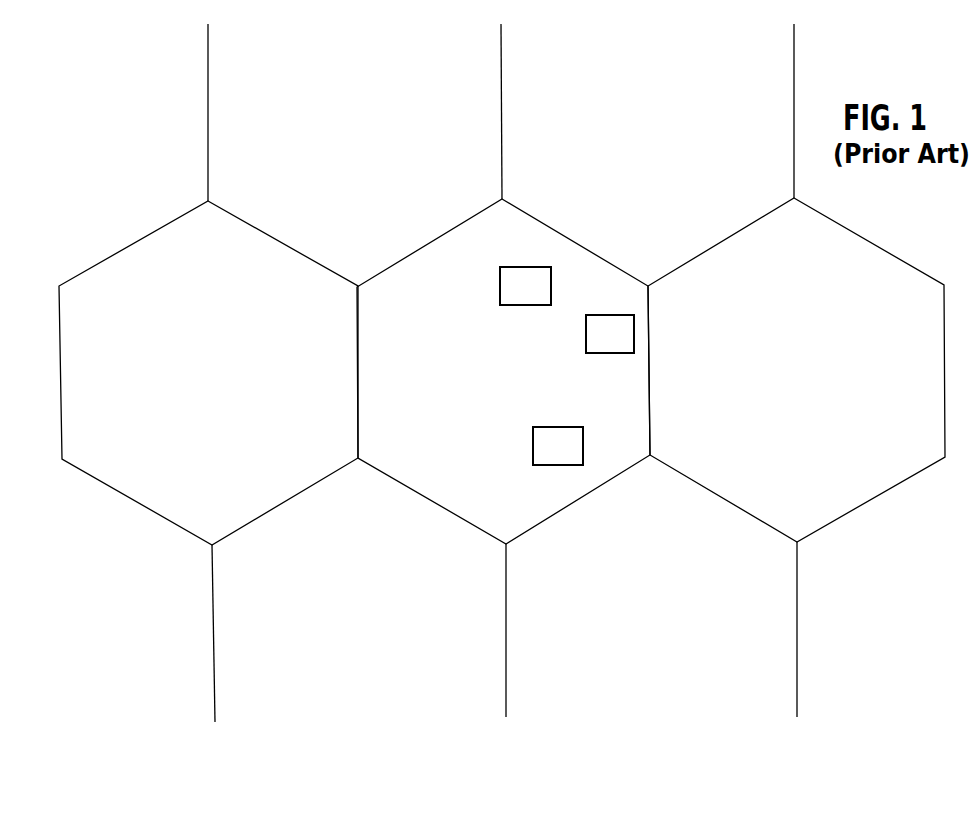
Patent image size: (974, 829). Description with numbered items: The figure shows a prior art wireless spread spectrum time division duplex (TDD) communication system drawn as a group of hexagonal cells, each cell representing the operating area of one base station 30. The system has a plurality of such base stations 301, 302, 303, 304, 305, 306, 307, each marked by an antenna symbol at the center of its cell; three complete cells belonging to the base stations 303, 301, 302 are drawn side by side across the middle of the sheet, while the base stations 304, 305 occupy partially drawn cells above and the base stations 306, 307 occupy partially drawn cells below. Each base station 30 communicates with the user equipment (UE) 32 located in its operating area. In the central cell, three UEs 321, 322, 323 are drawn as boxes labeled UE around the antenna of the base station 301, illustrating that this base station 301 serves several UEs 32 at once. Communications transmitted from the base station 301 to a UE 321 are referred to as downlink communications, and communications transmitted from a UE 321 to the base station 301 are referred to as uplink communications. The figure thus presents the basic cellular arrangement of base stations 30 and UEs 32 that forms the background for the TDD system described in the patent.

The base station 30 is at (502, 373).
The user equipment 32 is at (556, 381).
The base station 301 is at (503, 371).
The base station 302 is at (796, 370).
The base station 303 is at (208, 373).
The base station 304 is at (355, 112).
The base station 305 is at (715, 111).
The base station 306 is at (359, 633).
The base station 307 is at (719, 629).
The user equipment 321 is at (533, 445).
The user equipment 322 is at (615, 353).
The user equipment 323 is at (523, 305).